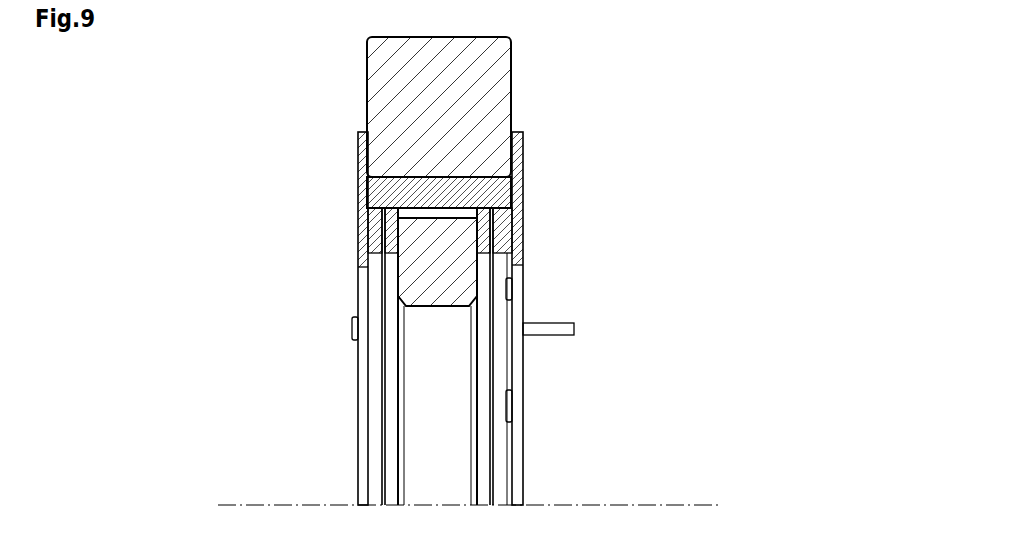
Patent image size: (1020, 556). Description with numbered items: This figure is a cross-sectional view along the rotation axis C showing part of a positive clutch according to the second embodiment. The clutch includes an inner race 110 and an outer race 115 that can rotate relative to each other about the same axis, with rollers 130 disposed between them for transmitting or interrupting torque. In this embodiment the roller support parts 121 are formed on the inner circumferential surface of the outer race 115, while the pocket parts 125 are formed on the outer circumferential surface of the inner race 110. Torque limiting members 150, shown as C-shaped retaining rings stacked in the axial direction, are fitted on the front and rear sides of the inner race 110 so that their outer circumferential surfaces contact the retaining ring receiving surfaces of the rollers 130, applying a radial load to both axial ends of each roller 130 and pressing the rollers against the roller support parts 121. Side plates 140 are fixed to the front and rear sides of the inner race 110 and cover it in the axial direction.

The outer race 115 is at (488, 90).
The roller support parts 121 is at (398, 183).
The rollers 130 is at (498, 188).
The pocket parts 125 is at (412, 210).
The torque limiting members 150 is at (385, 287).
The inner race 110 is at (457, 288).
The side plates 140 is at (358, 378).
The rotation axis C is at (230, 505).